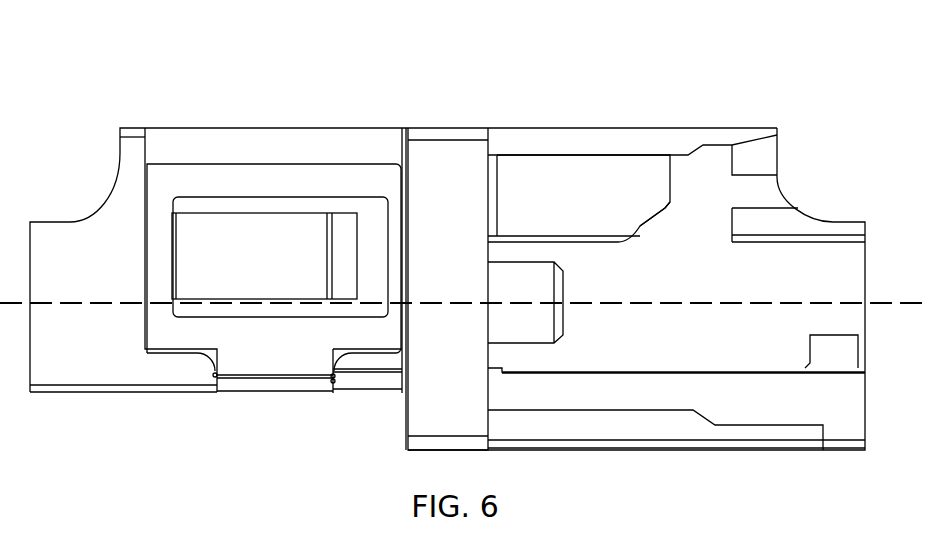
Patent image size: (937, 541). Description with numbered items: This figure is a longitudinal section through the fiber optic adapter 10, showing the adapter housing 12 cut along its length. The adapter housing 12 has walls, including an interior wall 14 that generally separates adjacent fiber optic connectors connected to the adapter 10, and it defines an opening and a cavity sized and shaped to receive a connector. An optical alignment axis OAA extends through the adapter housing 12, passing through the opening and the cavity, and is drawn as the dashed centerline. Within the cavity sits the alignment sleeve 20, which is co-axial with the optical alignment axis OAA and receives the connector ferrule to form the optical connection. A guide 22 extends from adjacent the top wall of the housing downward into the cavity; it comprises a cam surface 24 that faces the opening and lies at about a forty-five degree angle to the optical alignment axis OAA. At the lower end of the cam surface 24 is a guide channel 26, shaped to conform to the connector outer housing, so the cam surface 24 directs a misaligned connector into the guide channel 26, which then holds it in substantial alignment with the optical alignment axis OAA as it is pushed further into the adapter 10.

The adapter 10 is at (392, 98).
The adapter housing 12 is at (538, 143).
The interior wall 14 is at (815, 257).
The alignment sleeve 20 is at (512, 328).
The guide 22 is at (618, 168).
The cam surface 24 is at (660, 210).
The guide channel 26 is at (522, 237).
The optical alignment axis OAA is at (77, 301).